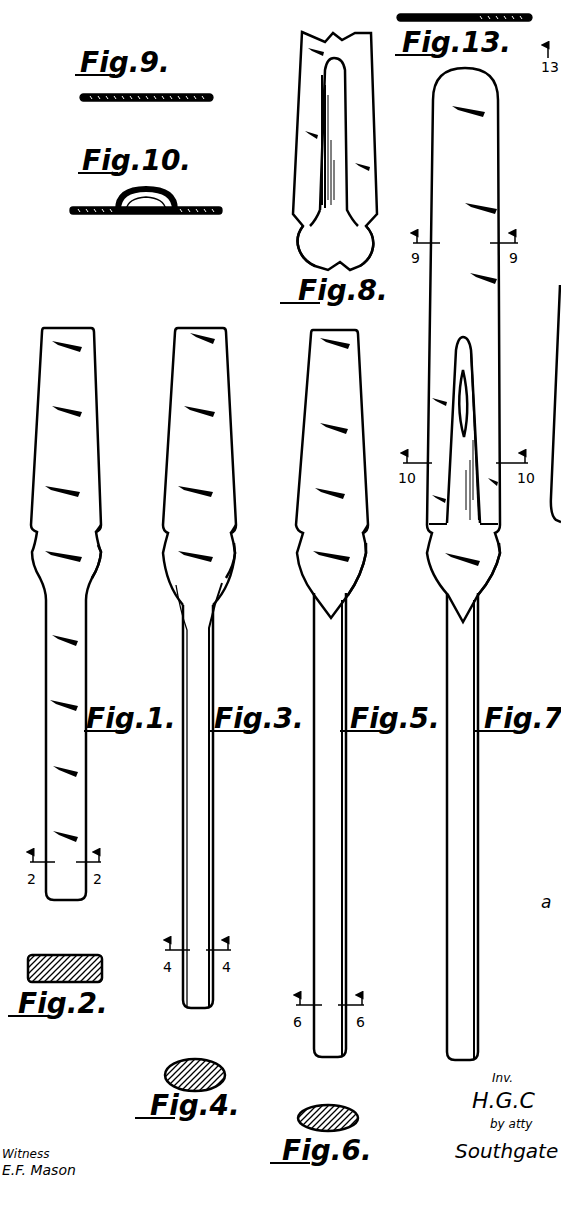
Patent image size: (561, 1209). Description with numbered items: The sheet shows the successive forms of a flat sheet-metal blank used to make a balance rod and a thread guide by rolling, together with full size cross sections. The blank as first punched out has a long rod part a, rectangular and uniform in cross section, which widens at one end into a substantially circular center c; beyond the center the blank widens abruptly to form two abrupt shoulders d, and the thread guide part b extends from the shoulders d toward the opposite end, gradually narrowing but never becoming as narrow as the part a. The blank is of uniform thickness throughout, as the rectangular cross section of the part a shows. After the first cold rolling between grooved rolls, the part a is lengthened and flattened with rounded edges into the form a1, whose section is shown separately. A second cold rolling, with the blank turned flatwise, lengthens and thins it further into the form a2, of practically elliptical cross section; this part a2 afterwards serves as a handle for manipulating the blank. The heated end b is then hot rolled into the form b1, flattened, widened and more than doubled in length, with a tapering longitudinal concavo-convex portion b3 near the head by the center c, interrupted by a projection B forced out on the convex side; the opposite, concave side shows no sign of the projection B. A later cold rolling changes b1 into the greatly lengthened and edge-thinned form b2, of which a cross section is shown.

In FIG. 1, the balance rod part of the blank a is at (52, 678).
In FIG. 2, the balance rod part of the blank a is at (68, 955).
In FIG. 3, the lengthened balance rod part a1 is at (206, 840).
In FIG. 4, the lengthened balance rod part a1 is at (199, 1060).
In FIG. 5, the thinned balance rod part a2 is at (338, 895).
In FIG. 6, the thinned balance rod part a2 is at (337, 1105).
In FIG. 7, the thinned balance rod part a2 is at (475, 965).
In FIG. 1, the thread guide part of the blank b is at (88, 420).
In FIG. 3, the thread guide part of the blank b is at (216, 442).
In FIG. 5, the thread guide part of the blank b is at (347, 395).
In FIG. 7, the hot-rolled thread guide part b1 is at (500, 313).
In FIG. 8, the hot-rolled thread guide part b1 is at (300, 108).
In FIG. 9, the hot-rolled thread guide part b1 is at (80, 97).
In FIG. 10, the hot-rolled thread guide part b1 is at (72, 212).
In FIG. 13, the further rolled thread guide part b2 is at (397, 17).
In FIG. 7, the longitudinal concavo-convex portion b3 is at (465, 455).
In FIG. 8, the longitudinal concavo-convex portion b3 is at (343, 188).
In FIG. 10, the longitudinal concavo-convex portion b3 is at (148, 210).
In FIG. 7, the projection B is at (470, 398).
In FIG. 1, the substantially circular center c is at (92, 557).
In FIG. 3, the substantially circular center c is at (222, 557).
In FIG. 5, the substantially circular center c is at (355, 560).
In FIG. 7, the substantially circular center c is at (490, 560).
In FIG. 8, the substantially circular center c is at (320, 243).
In FIG. 1, the abrupt shoulders d is at (100, 527).
In FIG. 3, the abrupt shoulders d is at (236, 527).
In FIG. 5, the abrupt shoulders d is at (368, 530).